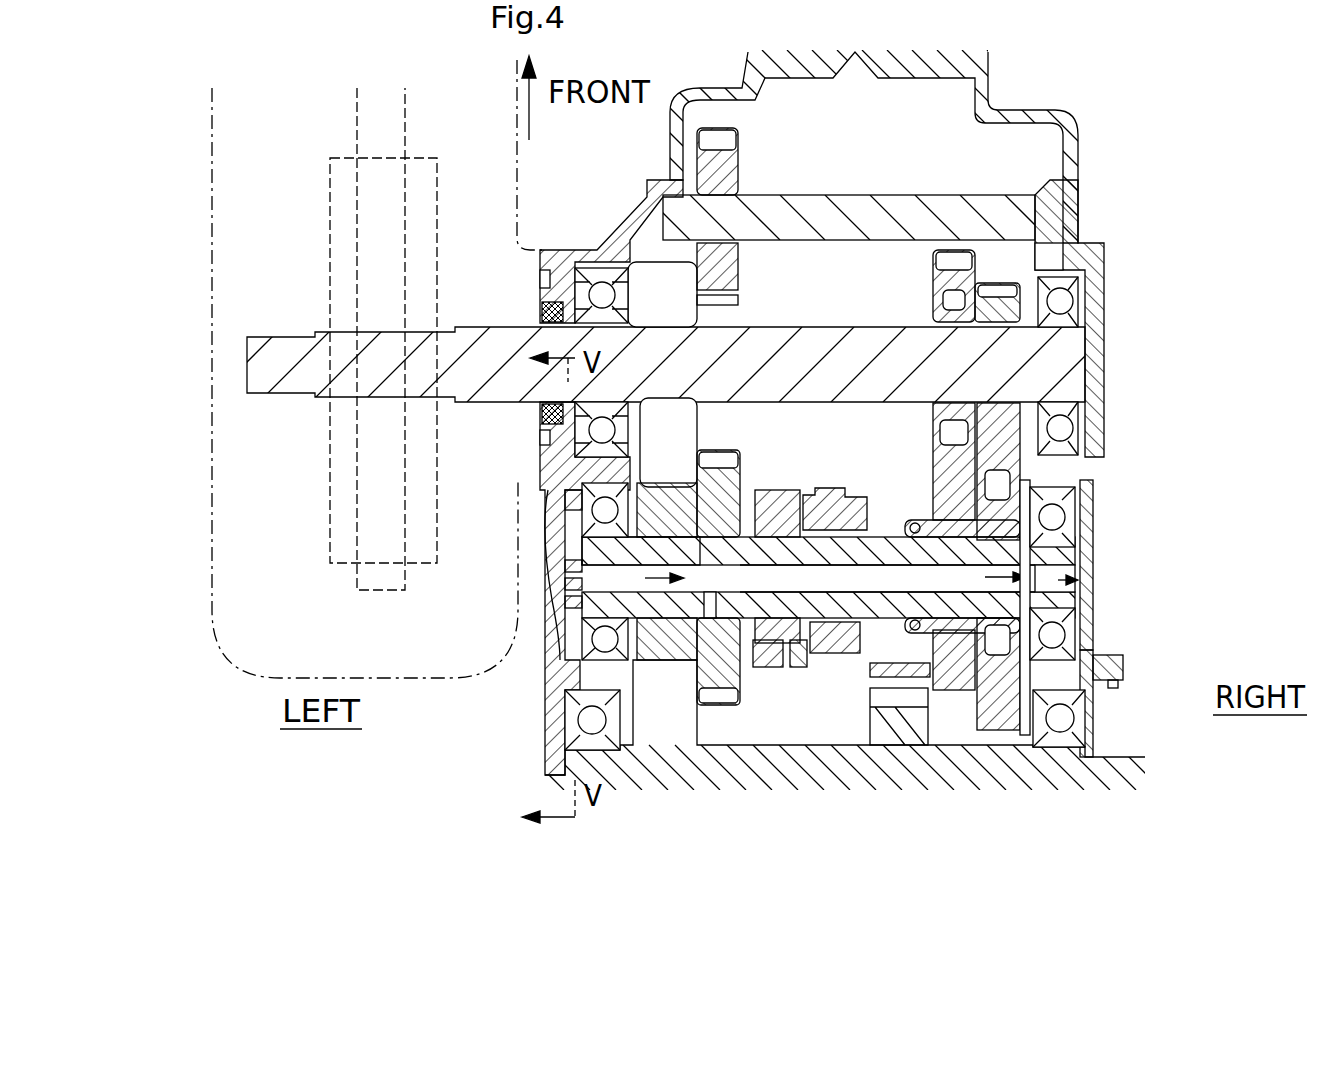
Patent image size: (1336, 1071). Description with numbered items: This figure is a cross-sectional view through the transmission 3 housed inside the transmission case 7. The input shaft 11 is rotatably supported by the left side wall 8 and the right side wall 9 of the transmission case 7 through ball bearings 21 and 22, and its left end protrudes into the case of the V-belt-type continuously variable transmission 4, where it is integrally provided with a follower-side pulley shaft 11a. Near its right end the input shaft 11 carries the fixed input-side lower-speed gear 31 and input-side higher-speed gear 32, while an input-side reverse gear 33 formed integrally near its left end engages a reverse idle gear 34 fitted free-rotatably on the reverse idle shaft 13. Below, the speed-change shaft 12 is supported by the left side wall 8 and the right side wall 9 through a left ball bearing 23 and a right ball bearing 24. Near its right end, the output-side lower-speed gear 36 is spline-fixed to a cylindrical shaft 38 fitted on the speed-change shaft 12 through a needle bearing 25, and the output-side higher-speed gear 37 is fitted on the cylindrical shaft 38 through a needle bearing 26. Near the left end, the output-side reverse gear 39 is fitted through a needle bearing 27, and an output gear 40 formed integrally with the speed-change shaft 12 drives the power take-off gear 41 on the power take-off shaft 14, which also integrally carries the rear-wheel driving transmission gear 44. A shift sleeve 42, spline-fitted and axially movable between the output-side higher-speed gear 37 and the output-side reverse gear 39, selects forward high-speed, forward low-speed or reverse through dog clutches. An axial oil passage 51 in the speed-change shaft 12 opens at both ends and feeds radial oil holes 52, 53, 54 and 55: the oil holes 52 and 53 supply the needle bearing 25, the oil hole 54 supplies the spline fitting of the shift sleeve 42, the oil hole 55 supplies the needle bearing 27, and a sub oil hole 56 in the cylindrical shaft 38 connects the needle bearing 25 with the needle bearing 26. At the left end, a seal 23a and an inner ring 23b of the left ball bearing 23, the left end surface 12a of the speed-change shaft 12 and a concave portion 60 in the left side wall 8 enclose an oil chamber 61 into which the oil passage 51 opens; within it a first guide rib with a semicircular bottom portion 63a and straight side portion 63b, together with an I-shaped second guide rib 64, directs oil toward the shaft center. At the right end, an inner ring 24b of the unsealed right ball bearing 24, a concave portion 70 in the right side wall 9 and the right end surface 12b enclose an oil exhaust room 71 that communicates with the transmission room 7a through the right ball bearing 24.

The power unit 3 is at (796, 112).
The V-belt-type continuously variable transmission 4 is at (272, 241).
The transmission case 7 is at (1012, 118).
The transmission room 7a is at (917, 300).
The left side wall 8 is at (548, 766).
The right side wall 9 is at (1068, 160).
The input shaft 11 is at (858, 350).
The follower-side pulley shaft 11a is at (343, 400).
The speed-change shaft 12 is at (855, 652).
The left end surface 12a is at (641, 548).
The right end surface 12b is at (1082, 590).
The reverse idle shaft 13 is at (838, 212).
The power take-off shaft 14 is at (968, 768).
The ball bearing 21 is at (601, 295).
The ball bearing 22 is at (1062, 300).
The left ball bearing 23 is at (580, 722).
The seal 23a is at (570, 640).
The inner ring 23b is at (575, 632).
The right ball bearing 24 is at (1116, 667).
The inner ring 24b is at (1080, 621).
The needle bearing 25 is at (1032, 560).
The needle bearing 26 is at (907, 510).
The needle bearing 27 is at (766, 566).
The input-side lower-speed gear 31 is at (1000, 300).
The input-side higher-speed gear 32 is at (950, 253).
The input-side reverse gear 33 is at (738, 300).
The reverse idle gear 34 is at (725, 140).
The output-side lower-speed gear 36 is at (1000, 440).
The output-side higher-speed gear 37 is at (945, 470).
The cylindrical shaft 38 is at (1030, 512).
The output-side reverse gear 39 is at (712, 700).
The output gear 40 is at (665, 500).
The power take-off gear 41 is at (665, 650).
The shift sleeve 42 is at (740, 510).
The rear-wheel driving transmission gear 44 is at (895, 700).
The oil passage 51 is at (800, 658).
The oil hole 52 is at (967, 578).
The oil hole 53 is at (887, 578).
The oil hole 54 is at (887, 578).
The oil hole 55 is at (712, 600).
The sub oil hole 56 is at (940, 473).
The concave portion 60 is at (560, 560).
The oil chamber 61 is at (565, 604).
The bottom portion 63a is at (565, 500).
The side portion 63b is at (565, 585).
The second guide rib 64 is at (565, 568).
The concave portion 70 is at (1092, 545).
The oil exhaust room 71 is at (1080, 520).